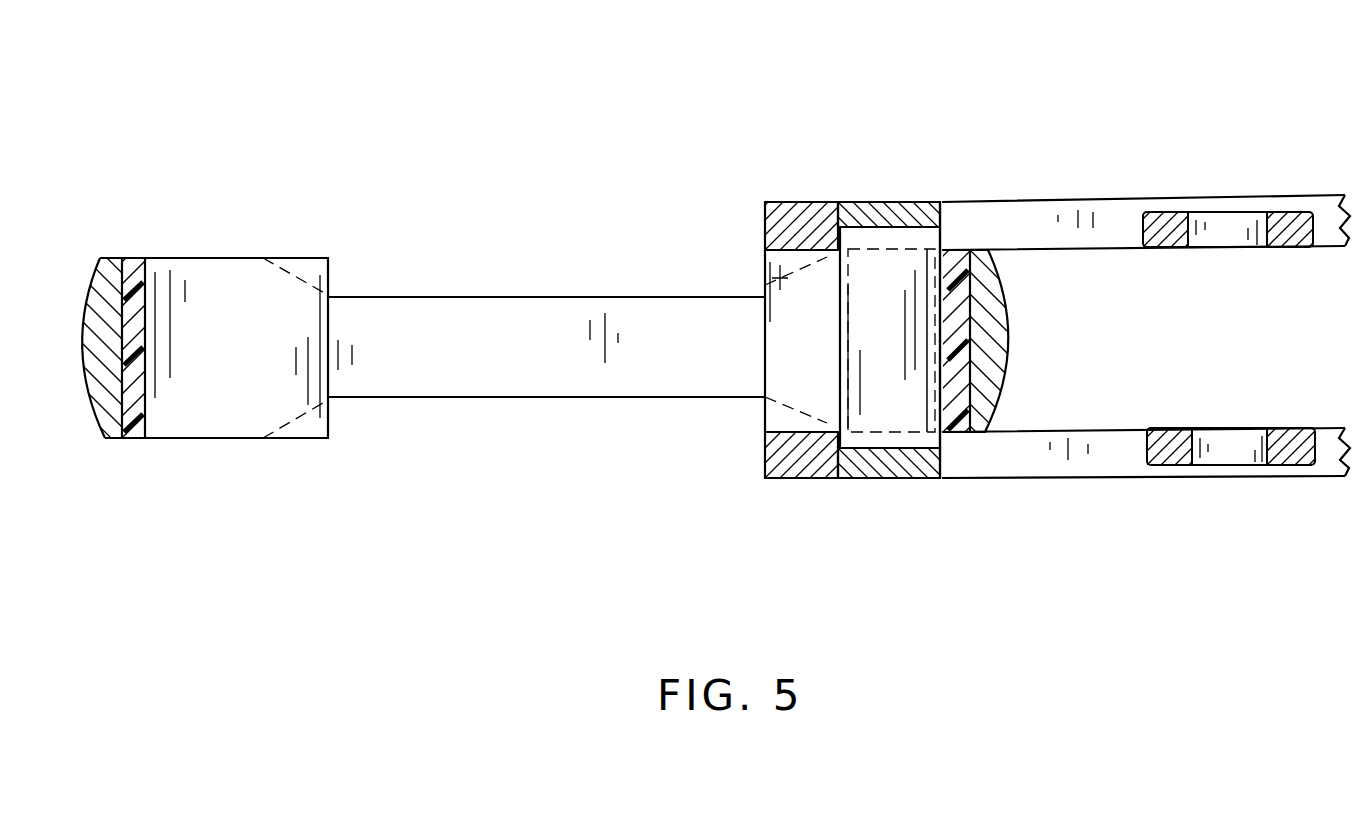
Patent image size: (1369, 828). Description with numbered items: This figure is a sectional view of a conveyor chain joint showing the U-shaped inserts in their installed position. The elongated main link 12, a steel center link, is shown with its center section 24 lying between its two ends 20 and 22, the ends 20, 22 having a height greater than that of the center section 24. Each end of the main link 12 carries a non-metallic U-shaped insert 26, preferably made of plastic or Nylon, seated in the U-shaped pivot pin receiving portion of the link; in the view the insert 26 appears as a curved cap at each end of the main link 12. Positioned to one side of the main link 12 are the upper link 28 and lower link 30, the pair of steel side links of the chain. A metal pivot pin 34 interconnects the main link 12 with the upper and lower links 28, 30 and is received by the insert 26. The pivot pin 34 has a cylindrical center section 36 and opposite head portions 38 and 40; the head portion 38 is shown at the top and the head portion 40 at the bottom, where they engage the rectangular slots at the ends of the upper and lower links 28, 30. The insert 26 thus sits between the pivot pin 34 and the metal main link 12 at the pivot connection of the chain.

The main link 12 is at (537, 257).
The end of main link 20 is at (88, 398).
The end of main link 22 is at (1005, 368).
The center section 24 is at (482, 362).
The U-shaped insert 26 is at (155, 258).
The upper link 28 is at (1205, 188).
The lower link 30 is at (1083, 480).
The pivot pin 34 is at (841, 301).
The cylindrical center section 36 is at (890, 350).
The head portion 38 is at (870, 203).
The head portion 40 is at (893, 462).